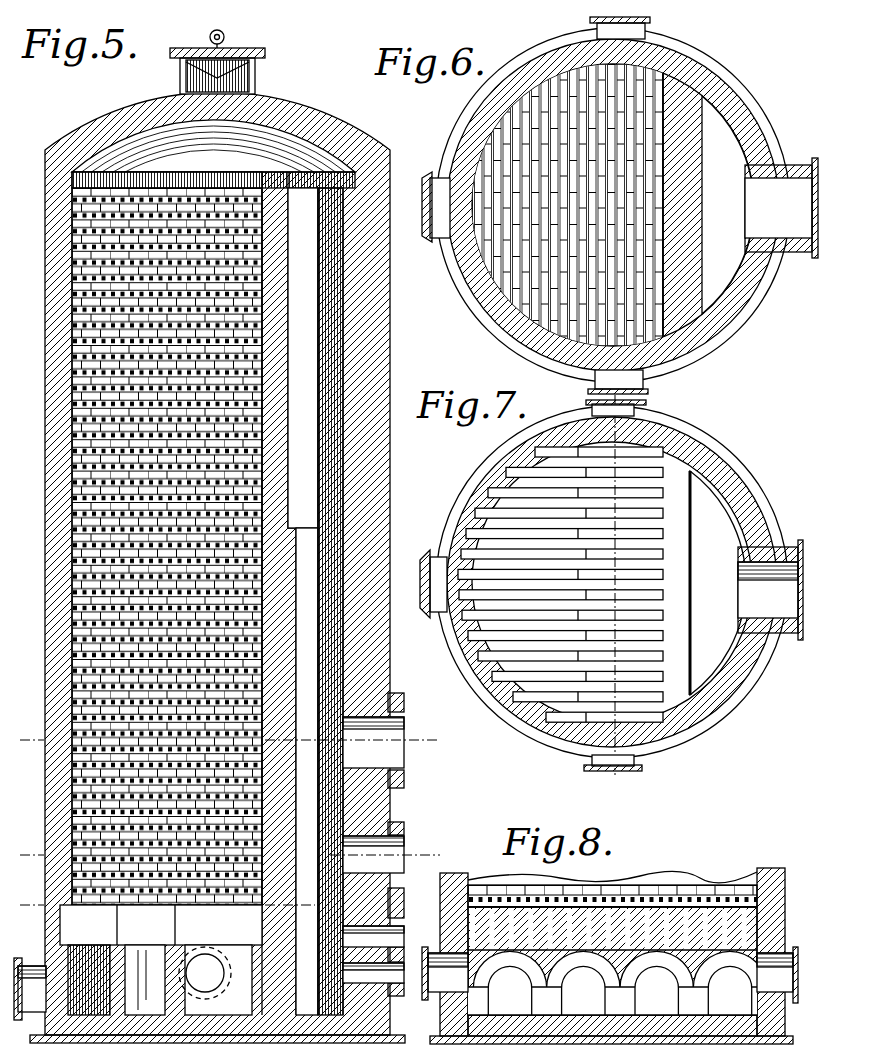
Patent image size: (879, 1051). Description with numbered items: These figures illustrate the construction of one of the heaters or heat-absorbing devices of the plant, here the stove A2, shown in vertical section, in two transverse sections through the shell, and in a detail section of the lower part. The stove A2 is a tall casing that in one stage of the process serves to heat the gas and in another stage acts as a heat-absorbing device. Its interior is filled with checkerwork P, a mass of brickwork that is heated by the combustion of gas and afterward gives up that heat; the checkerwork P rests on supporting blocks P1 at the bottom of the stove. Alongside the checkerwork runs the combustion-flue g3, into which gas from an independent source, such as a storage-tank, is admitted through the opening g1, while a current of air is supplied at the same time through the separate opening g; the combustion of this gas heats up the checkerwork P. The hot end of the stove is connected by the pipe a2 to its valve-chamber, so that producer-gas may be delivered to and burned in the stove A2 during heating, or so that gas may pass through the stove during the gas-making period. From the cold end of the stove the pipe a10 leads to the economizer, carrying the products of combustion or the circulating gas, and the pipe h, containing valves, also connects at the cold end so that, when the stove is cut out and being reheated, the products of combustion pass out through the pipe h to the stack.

In FIG. 5, the stove A2 is at (209, 536).
In FIG. 6, the stove A2 is at (613, 205).
In FIG. 7, the stove A2 is at (712, 446).
In FIG. 8, the stove A2 is at (611, 954).
In FIG. 5, the checkerwork P is at (285, 593).
In FIG. 6, the checkerwork P is at (497, 153).
In FIG. 8, the checkerwork P is at (621, 888).
In FIG. 5, the supporting blocks P1 is at (161, 925).
In FIG. 5, the combustion-flue g3 is at (304, 601).
In FIG. 6, the combustion-flue g3 is at (728, 205).
In FIG. 7, the combustion-flue g3 is at (718, 583).
In FIG. 5, the pipe a2 is at (373, 742).
In FIG. 6, the pipe a2 is at (781, 208).
In FIG. 7, the pipe a2 is at (770, 590).
In FIG. 5, the opening g is at (373, 858).
In FIG. 5, the opening g1 is at (385, 934).
In FIG. 5, the pipe h is at (382, 974).
In FIG. 6, the pipe h is at (640, 391).
In FIG. 7, the pipe h is at (615, 770).
In FIG. 5, the pipe a10 is at (215, 980).
In FIG. 6, the pipe a10 is at (645, 19).
In FIG. 7, the pipe a10 is at (592, 398).
In FIG. 8, the pipe a10 is at (777, 975).